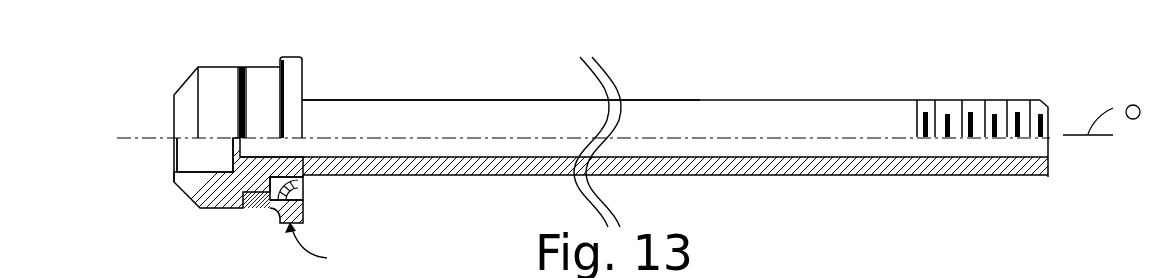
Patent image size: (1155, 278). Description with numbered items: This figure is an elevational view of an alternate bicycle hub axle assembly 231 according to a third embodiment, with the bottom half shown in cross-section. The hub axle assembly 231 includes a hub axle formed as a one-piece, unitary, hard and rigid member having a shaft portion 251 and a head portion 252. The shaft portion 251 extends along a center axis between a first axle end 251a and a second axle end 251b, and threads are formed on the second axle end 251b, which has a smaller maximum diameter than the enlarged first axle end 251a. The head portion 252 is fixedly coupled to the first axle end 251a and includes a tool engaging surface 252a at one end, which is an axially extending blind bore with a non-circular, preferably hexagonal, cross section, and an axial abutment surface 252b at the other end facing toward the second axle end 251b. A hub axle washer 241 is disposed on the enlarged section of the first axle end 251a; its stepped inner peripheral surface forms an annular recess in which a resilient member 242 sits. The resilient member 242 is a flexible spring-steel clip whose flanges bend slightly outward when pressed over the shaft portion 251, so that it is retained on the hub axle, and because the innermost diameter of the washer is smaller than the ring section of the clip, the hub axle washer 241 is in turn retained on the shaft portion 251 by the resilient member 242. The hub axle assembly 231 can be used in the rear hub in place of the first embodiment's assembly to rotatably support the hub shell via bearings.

The hub axle assembly 231 is at (775, 62).
The hub axle washer 241 is at (305, 72).
The resilient member 242 is at (291, 187).
The shaft portion 251 is at (663, 100).
The first axle end 251a is at (353, 100).
The second axle end 251b is at (967, 100).
The head portion 252 is at (210, 67).
The tool engaging surface 252a is at (198, 164).
The axial abutment surface 252b is at (240, 82).